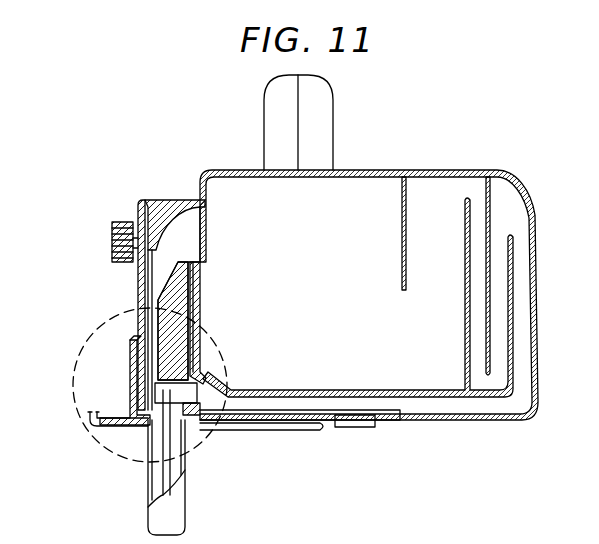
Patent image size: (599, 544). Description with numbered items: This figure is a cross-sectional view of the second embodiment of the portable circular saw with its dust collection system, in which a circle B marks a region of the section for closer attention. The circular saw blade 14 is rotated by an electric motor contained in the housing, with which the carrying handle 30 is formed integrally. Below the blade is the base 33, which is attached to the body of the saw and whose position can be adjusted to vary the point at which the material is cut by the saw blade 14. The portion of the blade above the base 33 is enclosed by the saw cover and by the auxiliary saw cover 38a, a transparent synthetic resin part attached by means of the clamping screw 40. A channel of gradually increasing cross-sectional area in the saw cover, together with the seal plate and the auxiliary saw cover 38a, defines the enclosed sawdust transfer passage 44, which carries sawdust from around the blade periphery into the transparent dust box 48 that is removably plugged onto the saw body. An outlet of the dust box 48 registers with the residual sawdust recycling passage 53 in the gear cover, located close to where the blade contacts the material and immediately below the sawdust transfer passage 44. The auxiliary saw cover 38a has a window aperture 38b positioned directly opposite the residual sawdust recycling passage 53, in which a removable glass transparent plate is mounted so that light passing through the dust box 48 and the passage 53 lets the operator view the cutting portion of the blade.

The carrying handle 30 is at (322, 120).
The dust box 48 is at (445, 186).
The sawdust transfer passage 44 is at (177, 225).
The clamping screw 40 is at (120, 222).
The auxiliary saw cover 38a is at (135, 292).
The window aperture 38b is at (130, 376).
The base 33 is at (92, 420).
The residual sawdust recycling passage 53 is at (168, 393).
The circular saw blade 14 is at (148, 487).
The detail circle B is at (90, 335).